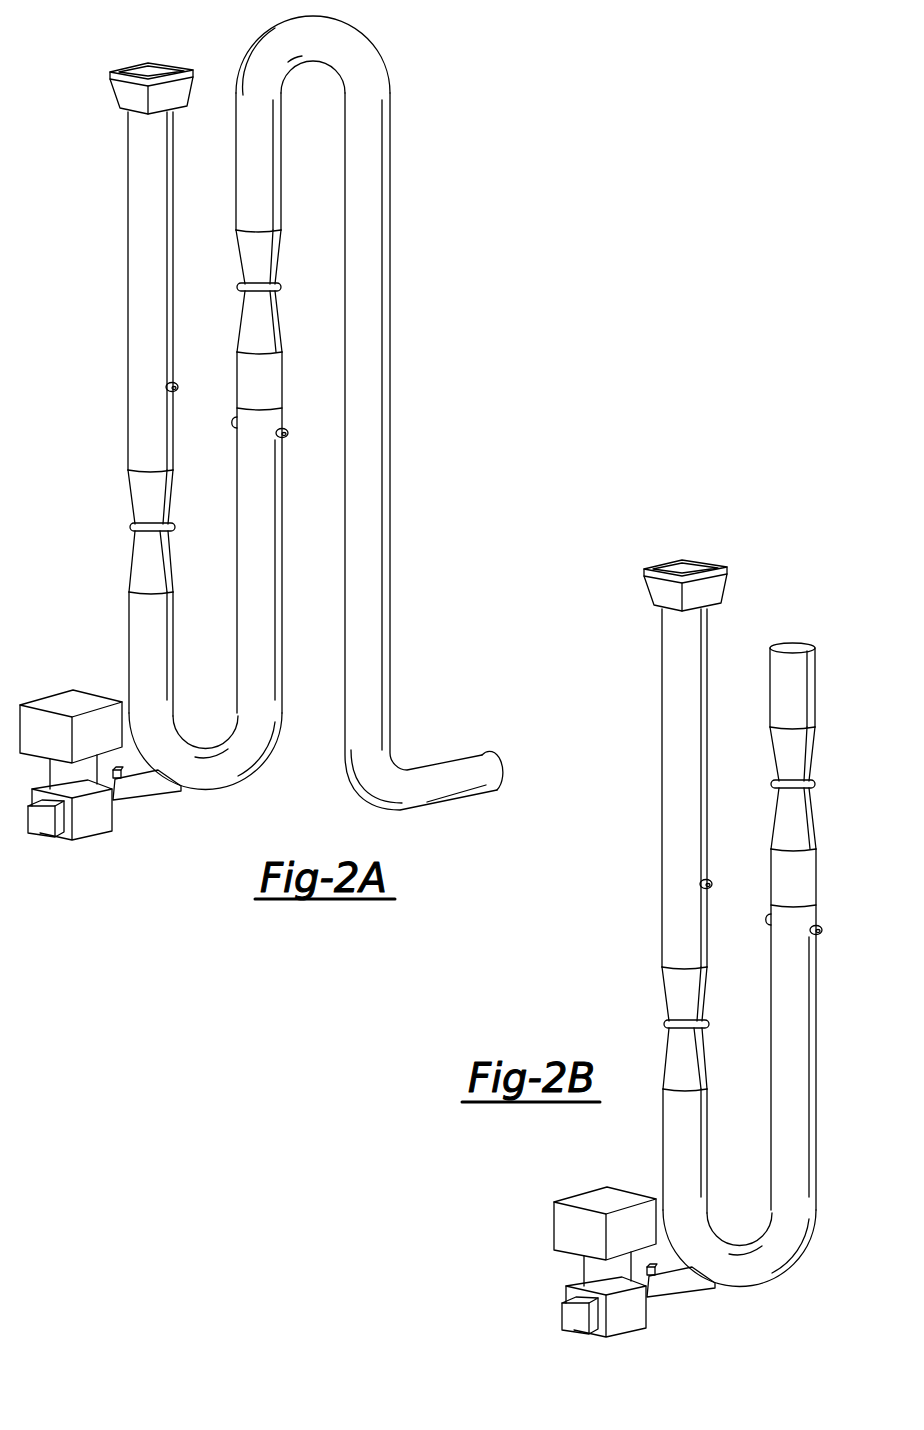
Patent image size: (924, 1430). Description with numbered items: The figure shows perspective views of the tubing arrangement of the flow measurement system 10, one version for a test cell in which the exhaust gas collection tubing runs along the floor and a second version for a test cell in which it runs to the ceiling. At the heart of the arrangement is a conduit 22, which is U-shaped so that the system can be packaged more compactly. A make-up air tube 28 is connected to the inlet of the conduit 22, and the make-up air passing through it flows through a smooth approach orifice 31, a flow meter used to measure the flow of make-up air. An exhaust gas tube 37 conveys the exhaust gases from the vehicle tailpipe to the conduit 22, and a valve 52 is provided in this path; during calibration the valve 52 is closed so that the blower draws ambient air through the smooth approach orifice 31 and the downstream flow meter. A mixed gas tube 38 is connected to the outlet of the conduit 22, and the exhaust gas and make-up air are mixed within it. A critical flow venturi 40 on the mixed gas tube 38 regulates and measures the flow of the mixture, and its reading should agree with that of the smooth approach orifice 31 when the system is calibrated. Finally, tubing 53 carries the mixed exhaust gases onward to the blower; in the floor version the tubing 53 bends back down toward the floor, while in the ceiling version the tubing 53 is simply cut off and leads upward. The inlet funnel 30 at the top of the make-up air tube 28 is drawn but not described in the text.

In FIG. 2A, the flow measurement system 10 is at (393, 27).
In FIG. 2B, the flow measurement system 10 is at (713, 935).
In FIG. 2A, the conduit 22 is at (227, 790).
In FIG. 2B, the conduit 22 is at (739, 1269).
In FIG. 2A, the make-up air tube 28 is at (140, 272).
In FIG. 2B, the make-up air tube 28 is at (649, 911).
In FIG. 2A, the funnel inlet 30 is at (133, 67).
In FIG. 2B, the funnel inlet 30 is at (669, 569).
In FIG. 2A, the smooth approach orifice 31 is at (135, 500).
In FIG. 2B, the smooth approach orifice 31 is at (646, 1028).
In FIG. 2A, the exhaust gas tube 37 is at (148, 796).
In FIG. 2B, the exhaust gas tube 37 is at (681, 1317).
In FIG. 2A, the mixed gas tube 38 is at (283, 572).
In FIG. 2B, the mixed gas tube 38 is at (819, 1029).
In FIG. 2A, the critical flow venturi 40 is at (283, 258).
In FIG. 2B, the critical flow venturi 40 is at (818, 789).
In FIG. 2A, the valve 52 is at (52, 702).
In FIG. 2B, the valve 52 is at (605, 1238).
In FIG. 2A, the tubing 53 is at (374, 440).
In FIG. 2B, the tubing 53 is at (815, 679).